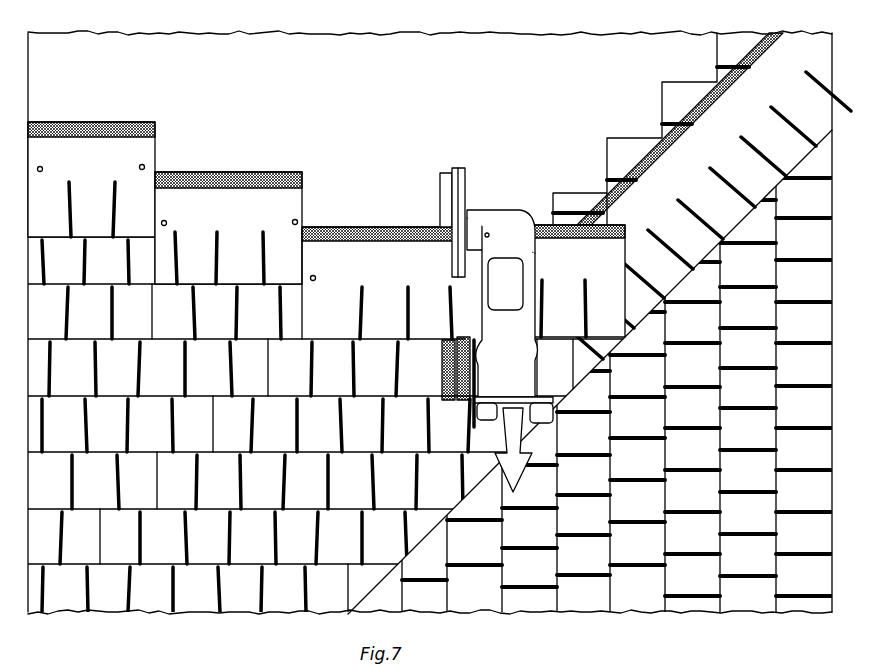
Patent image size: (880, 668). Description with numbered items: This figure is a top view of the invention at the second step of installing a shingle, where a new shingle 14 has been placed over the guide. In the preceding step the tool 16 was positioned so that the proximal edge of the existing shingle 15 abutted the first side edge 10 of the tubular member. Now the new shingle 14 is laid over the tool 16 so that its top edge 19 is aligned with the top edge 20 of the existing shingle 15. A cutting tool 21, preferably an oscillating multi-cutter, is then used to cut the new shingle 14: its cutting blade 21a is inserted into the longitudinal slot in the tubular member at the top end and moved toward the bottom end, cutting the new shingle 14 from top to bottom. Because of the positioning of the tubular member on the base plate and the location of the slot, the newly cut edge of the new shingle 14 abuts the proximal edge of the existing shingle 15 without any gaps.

The first side edge 10 is at (440, 218).
The new shingle 14 is at (395, 273).
The existing shingle 15 is at (313, 318).
The tool 16 is at (440, 183).
The top edge 19 is at (538, 225).
The top edge 20 is at (311, 227).
The cutting tool 21 is at (502, 207).
The cutting blade 21a is at (455, 167).